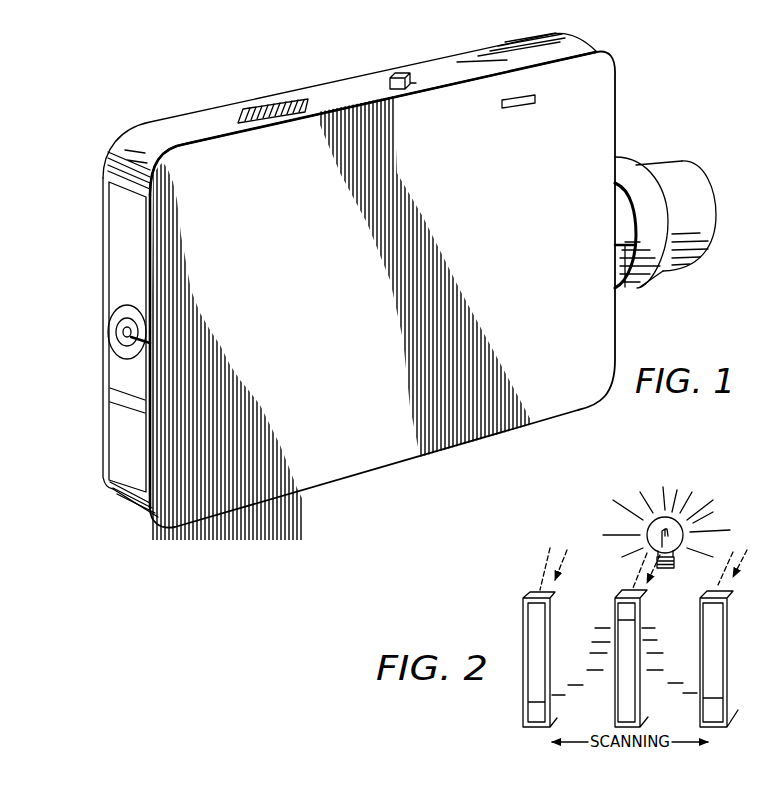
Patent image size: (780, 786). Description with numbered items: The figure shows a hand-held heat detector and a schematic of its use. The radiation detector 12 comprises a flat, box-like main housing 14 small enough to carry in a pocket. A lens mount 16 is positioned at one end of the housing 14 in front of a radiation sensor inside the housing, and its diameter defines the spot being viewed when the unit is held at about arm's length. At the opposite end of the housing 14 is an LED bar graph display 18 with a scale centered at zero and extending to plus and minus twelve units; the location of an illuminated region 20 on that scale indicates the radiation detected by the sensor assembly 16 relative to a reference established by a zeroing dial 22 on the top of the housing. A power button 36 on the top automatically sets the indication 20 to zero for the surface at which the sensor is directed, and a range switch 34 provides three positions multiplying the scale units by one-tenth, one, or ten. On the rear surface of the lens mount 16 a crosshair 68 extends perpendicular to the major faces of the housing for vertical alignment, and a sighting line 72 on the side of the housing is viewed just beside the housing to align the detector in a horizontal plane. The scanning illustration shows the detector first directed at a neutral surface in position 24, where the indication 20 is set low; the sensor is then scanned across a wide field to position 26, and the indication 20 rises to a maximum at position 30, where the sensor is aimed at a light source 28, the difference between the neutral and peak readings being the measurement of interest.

In FIG. 1, the radiation detector 12 is at (331, 506).
In FIG. 1, the main housing 14 is at (408, 452).
In FIG. 1, the lens mount 16 is at (667, 157).
In FIG. 1, the LED bar graph display 18 is at (95, 452).
In FIG. 1, the illuminated region 20 is at (118, 400).
In FIG. 1, the zeroing dial 22 is at (272, 106).
In FIG. 2, the neutral surface position 24 is at (535, 732).
In FIG. 2, the end scan position 26 is at (720, 724).
In FIG. 2, the light source 28 is at (673, 525).
In FIG. 2, the maximum reading position 30 is at (620, 648).
In FIG. 1, the range switch 34 is at (513, 74).
In FIG. 1, the power button 36 is at (402, 72).
In FIG. 1, the crosshair 68 is at (628, 285).
In FIG. 1, the sighting line 72 is at (123, 332).